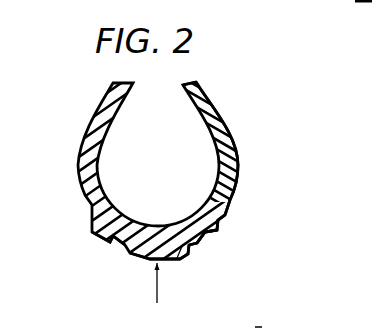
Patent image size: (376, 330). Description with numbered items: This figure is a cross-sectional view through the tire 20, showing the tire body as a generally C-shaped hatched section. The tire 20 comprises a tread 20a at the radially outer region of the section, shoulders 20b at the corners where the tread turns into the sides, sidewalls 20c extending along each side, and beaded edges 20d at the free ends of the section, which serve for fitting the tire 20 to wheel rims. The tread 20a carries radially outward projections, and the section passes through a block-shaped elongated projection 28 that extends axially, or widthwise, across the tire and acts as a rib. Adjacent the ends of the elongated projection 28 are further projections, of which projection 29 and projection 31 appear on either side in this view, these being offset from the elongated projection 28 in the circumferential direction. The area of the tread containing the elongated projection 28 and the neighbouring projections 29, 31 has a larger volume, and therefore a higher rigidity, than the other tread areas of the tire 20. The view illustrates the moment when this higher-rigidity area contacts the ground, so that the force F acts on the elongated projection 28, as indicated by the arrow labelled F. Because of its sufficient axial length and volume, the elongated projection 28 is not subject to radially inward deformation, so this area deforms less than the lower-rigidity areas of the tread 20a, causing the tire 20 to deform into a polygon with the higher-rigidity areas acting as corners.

The tire 20 is at (285, 127).
The tread 20a is at (221, 220).
The shoulders 20b is at (233, 192).
The sidewalls 20c is at (237, 160).
The beaded edges 20d is at (200, 91).
The elongated projection 28 is at (177, 248).
The projection 29 is at (97, 238).
The projection 31 is at (214, 232).
The force F is at (156, 294).